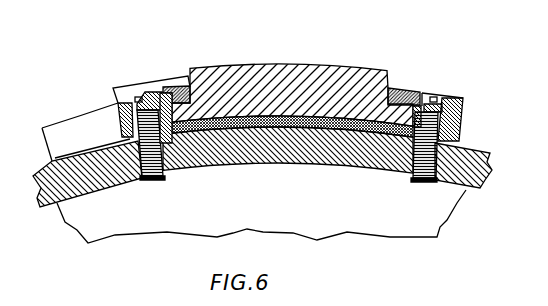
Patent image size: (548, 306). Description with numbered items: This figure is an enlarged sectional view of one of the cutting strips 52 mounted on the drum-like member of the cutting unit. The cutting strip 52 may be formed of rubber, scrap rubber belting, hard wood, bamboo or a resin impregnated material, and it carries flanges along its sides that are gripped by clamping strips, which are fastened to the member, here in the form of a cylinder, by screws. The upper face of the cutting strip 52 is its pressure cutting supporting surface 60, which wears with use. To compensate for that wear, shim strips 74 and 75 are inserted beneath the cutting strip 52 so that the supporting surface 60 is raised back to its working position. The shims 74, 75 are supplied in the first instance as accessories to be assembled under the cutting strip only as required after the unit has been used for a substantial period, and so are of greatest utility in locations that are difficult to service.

The cutting strip 52 is at (322, 72).
The pressure cutting supporting surface 60 is at (288, 116).
The shim strip 74 is at (243, 128).
The shim strip 75 is at (328, 124).